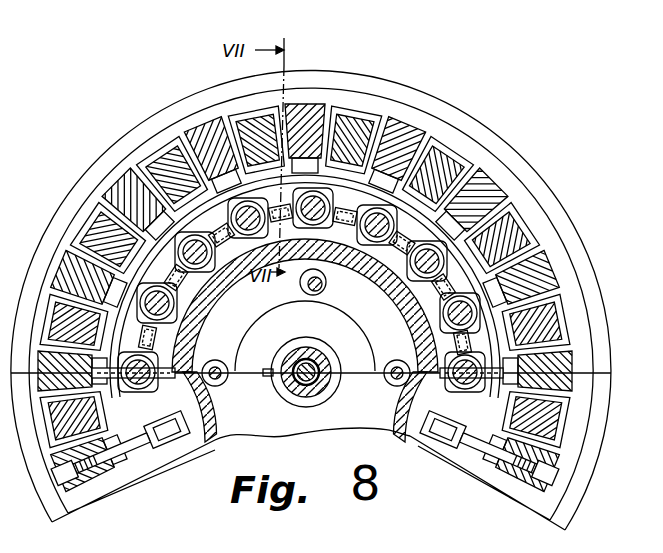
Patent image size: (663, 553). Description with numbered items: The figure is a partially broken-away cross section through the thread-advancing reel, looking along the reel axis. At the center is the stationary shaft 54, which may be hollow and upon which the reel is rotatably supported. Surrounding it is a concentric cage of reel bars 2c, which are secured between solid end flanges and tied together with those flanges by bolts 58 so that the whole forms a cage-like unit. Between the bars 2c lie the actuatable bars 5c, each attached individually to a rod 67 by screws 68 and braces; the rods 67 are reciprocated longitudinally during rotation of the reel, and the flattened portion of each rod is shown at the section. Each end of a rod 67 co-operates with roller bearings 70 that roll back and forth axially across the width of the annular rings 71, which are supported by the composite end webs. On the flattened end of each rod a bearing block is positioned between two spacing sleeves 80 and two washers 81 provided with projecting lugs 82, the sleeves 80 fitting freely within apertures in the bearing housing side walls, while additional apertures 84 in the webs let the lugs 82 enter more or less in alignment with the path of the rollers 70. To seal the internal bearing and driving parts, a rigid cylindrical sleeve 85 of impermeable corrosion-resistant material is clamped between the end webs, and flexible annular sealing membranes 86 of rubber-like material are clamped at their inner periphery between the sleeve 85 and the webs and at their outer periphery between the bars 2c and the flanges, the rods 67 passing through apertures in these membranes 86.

The actuatable bars 5c is at (312, 84).
The reel bars 2c is at (369, 119).
The flexible sealing membranes 86 is at (428, 218).
The additional apertures 84 is at (268, 258).
The bolts 58 is at (297, 275).
The roller bearings 70 is at (293, 291).
The projecting lugs 82 is at (340, 232).
The washers 81 is at (373, 243).
The spacing sleeves 80 is at (387, 244).
The rods 67 is at (424, 262).
The annular rings 71 is at (305, 305).
The shaft 54 is at (327, 378).
The rigid cylindrical sleeve 85 is at (197, 398).
The screws 68 is at (482, 447).